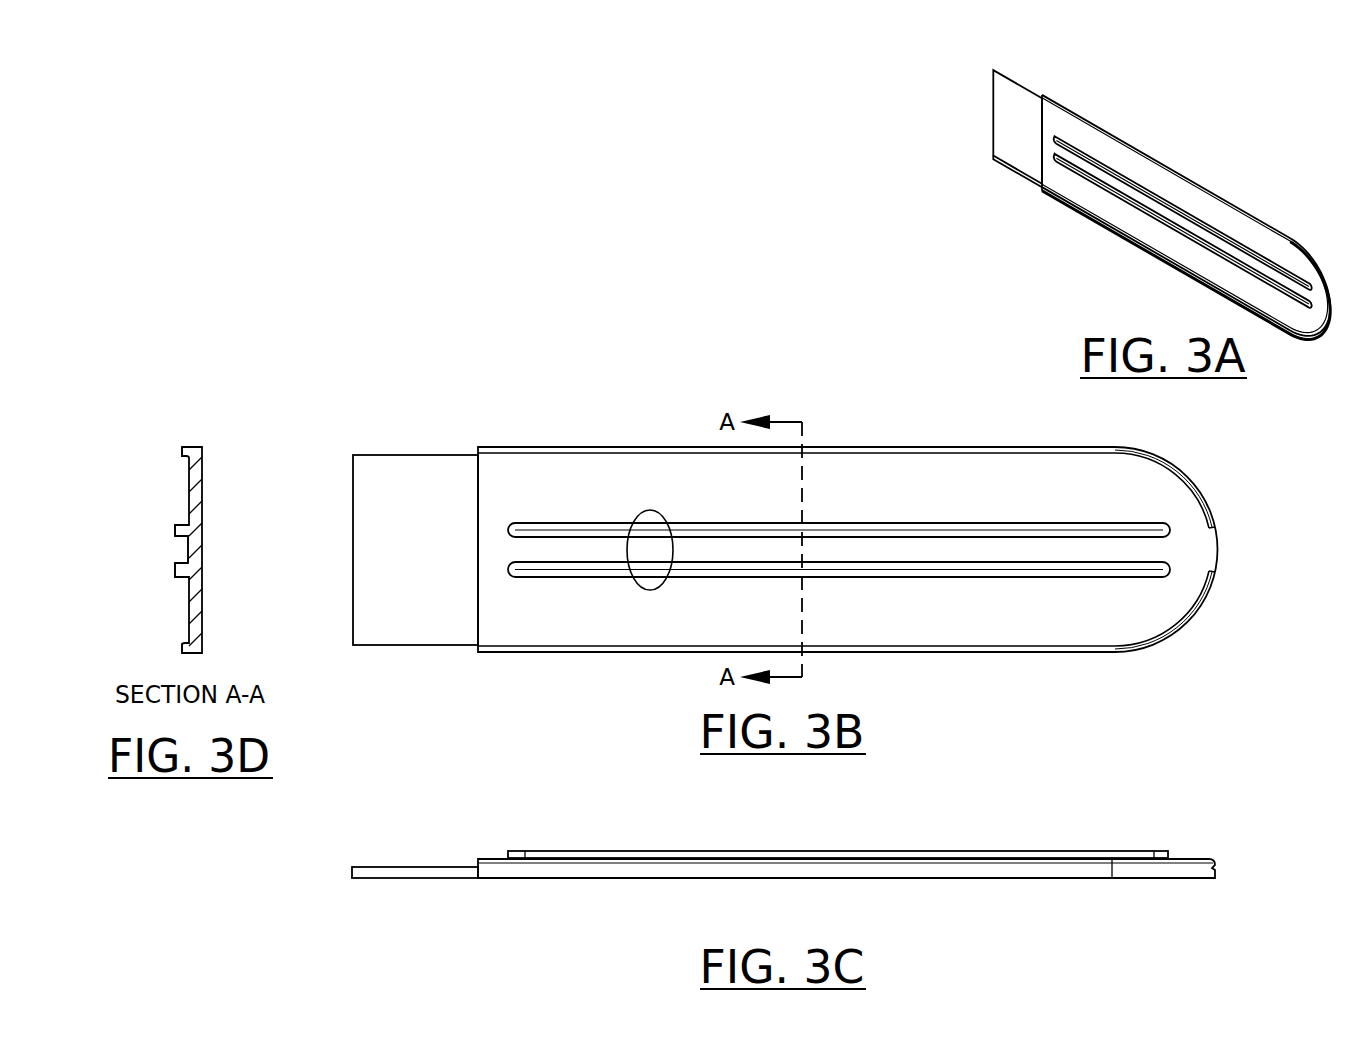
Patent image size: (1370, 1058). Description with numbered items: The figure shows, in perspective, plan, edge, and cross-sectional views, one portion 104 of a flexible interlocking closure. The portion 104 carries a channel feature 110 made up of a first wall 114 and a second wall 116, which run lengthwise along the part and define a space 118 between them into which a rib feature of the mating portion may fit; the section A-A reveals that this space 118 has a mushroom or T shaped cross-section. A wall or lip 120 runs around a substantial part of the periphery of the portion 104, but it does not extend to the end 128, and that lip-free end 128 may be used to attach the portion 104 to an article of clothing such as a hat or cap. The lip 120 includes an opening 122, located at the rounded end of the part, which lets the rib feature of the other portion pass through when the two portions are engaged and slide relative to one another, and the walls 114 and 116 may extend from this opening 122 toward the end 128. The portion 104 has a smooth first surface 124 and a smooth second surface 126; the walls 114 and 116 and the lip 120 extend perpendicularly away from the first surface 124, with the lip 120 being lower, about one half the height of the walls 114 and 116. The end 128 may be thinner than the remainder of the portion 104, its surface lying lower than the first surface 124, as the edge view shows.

In FIG. 3A, the portion 104 is at (1180, 165).
In FIG. 3B, the portion 104 is at (817, 512).
In FIG. 3C, the portion 104 is at (783, 843).
In FIG. 3D, the portion 104 is at (185, 493).
In FIG. 3B, the channel feature 110 is at (638, 515).
In FIG. 3B, the first wall 114 is at (920, 522).
In FIG. 3D, the first wall 114 is at (177, 528).
In FIG. 3B, the second wall 116 is at (983, 577).
In FIG. 3D, the second wall 116 is at (177, 575).
In FIG. 3B, the space 118 is at (863, 558).
In FIG. 3D, the space 118 is at (180, 553).
In FIG. 3B, the lip 120 is at (635, 445).
In FIG. 3D, the lip 120 is at (183, 455).
In FIG. 3B, the opening 122 is at (1215, 557).
In FIG. 3B, the first surface 124 is at (581, 622).
In FIG. 3C, the second surface 126 is at (885, 878).
In FIG. 3D, the second surface 126 is at (203, 473).
In FIG. 3B, the end 128 is at (412, 453).